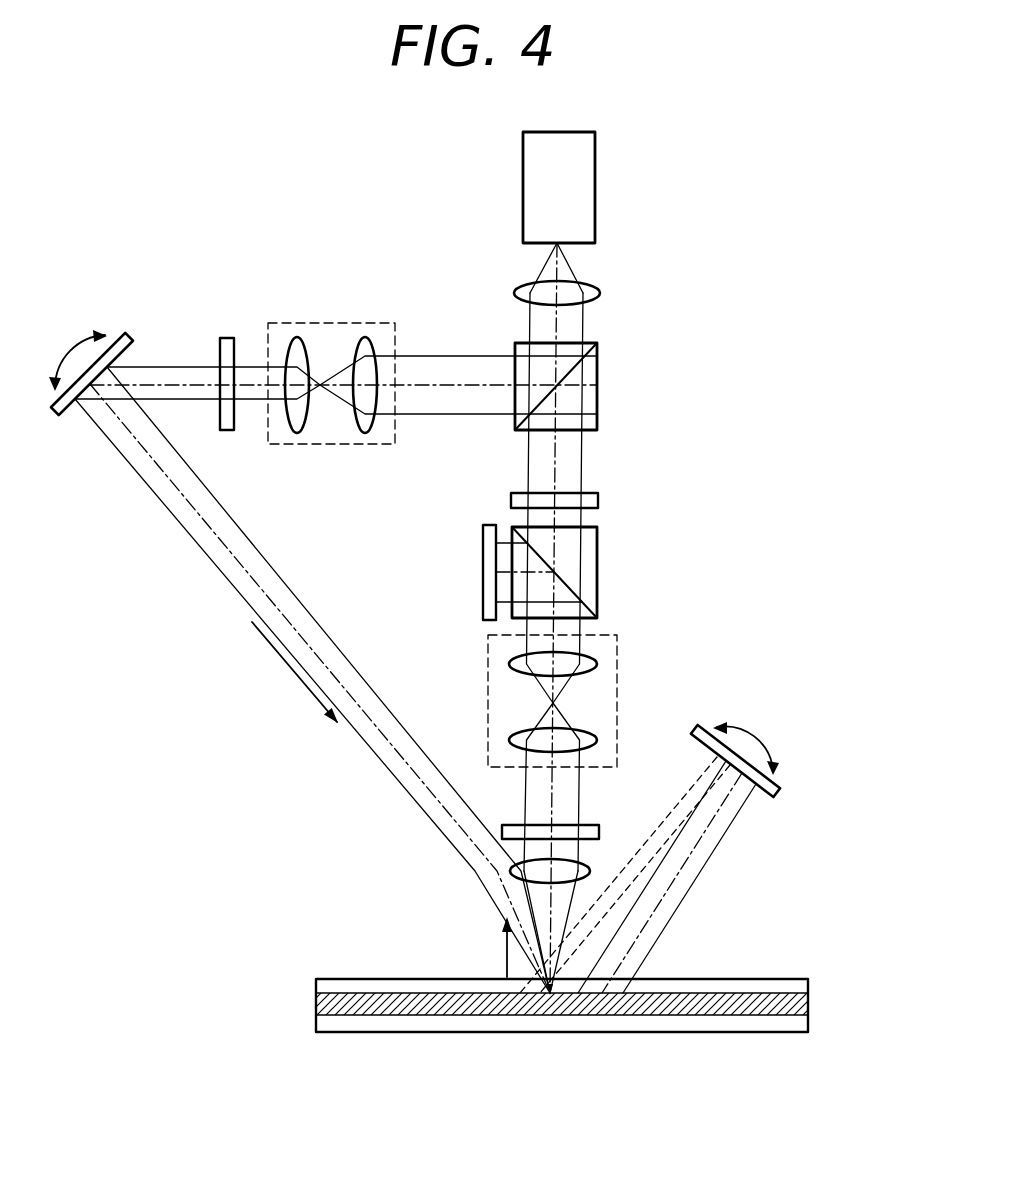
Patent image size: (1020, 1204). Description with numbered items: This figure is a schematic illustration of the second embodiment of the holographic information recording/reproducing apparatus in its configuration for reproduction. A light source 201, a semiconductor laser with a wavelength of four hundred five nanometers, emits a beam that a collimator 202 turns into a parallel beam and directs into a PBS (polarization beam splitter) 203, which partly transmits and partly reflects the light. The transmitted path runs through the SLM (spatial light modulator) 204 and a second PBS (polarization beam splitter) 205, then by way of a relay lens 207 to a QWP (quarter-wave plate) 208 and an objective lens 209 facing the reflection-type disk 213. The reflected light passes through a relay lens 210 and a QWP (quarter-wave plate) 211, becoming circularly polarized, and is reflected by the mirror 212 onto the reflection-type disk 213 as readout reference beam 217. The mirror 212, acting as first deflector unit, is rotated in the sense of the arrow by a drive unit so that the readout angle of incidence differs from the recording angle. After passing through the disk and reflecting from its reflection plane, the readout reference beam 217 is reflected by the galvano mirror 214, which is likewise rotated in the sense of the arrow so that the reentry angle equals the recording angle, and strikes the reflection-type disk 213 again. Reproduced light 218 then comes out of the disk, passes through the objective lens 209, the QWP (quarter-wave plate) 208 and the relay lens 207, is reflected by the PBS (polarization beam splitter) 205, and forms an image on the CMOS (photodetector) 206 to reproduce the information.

The light source 201 is at (596, 177).
The collimator 202 is at (600, 292).
The PBS (polarization beam splitter) 203 is at (598, 352).
The SLM (spatial light modulator) 204 is at (599, 496).
The PBS (polarization beam splitter) 205 is at (598, 562).
The CMOS (photodetector) 206 is at (482, 570).
The relay lens 207 is at (618, 661).
The QWP (quarter-wave plate) 208 is at (502, 831).
The objective lens 209 is at (590, 873).
The relay lens 210 is at (336, 323).
The QWP (quarter-wave plate) 211 is at (227, 338).
The mirror 212 is at (120, 332).
The reflection-type disk 213 is at (810, 1000).
The galvano mirror 214 is at (782, 788).
The readout reference beam 217 is at (290, 664).
The reproduced light 218 is at (505, 947).